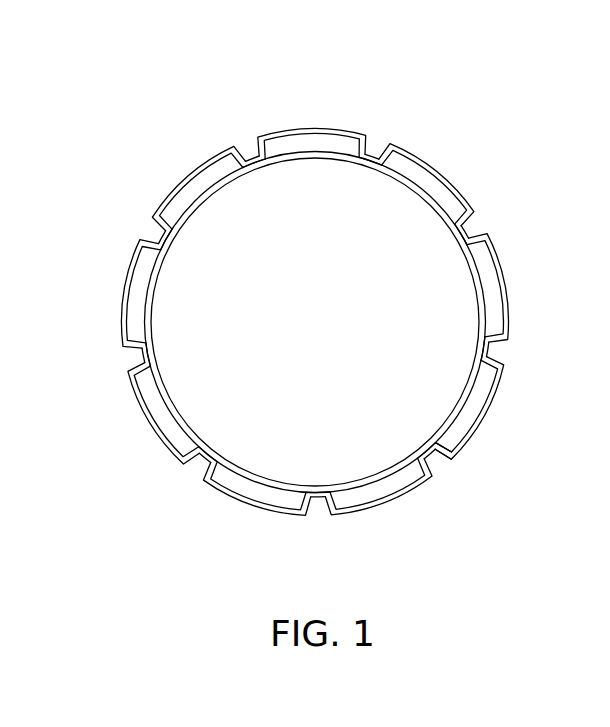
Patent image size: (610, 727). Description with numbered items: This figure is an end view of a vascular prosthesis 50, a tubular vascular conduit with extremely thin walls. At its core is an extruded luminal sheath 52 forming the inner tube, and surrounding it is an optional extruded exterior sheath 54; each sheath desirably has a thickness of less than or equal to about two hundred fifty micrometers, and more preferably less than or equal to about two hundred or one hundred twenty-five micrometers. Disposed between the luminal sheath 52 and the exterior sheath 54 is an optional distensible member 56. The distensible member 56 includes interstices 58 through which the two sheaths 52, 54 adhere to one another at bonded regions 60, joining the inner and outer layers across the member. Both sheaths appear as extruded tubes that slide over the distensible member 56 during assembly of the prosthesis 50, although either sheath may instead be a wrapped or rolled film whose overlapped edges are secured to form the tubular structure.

The prosthesis 50 is at (172, 124).
The luminal sheath 52 is at (460, 401).
The exterior sheath 54 is at (440, 168).
The distensible member 56 is at (497, 288).
The interstices 58 is at (318, 517).
The bonded regions 60 is at (446, 461).